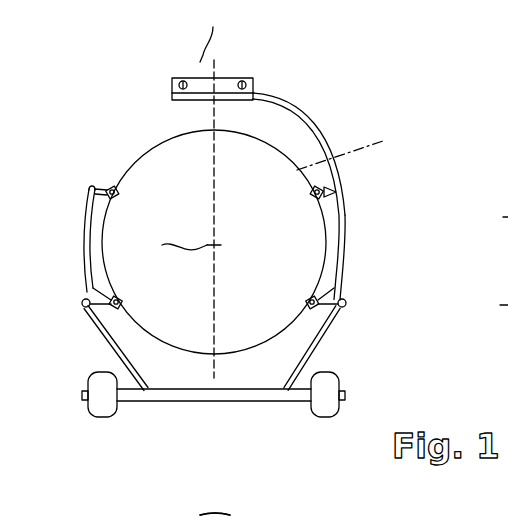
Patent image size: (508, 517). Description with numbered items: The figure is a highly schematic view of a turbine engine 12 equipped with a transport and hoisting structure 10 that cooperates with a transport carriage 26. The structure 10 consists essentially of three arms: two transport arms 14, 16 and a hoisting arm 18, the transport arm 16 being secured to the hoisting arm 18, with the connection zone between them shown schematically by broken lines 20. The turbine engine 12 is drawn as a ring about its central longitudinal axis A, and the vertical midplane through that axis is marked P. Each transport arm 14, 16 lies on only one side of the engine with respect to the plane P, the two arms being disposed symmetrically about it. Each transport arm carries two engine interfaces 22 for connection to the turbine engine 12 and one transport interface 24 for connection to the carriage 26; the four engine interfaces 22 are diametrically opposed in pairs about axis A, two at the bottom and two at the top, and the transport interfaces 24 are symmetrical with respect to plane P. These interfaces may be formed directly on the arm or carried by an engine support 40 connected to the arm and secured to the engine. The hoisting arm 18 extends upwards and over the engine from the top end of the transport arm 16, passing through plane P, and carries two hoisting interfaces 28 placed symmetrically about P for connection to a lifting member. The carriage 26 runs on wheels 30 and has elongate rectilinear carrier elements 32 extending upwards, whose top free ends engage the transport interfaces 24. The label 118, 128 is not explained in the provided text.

The transport and hoisting structure 10 is at (347, 105).
The turbine engine 12 is at (148, 154).
The transport arm 14 is at (84, 229).
The transport arm 16 is at (346, 218).
The hoisting arm 18 is at (300, 108).
The broken lines 20 is at (372, 150).
The engine interface 22 is at (118, 196).
The transport interface 24 is at (82, 304).
The transport carriage 26 is at (347, 382).
The hoisting interface 28 is at (183, 81).
The wheel 30 is at (102, 402).
The carrier element 32 is at (116, 353).
The engine support 40 is at (119, 191).
The vibrating element 118 is at (175, 516).
The drive element 128 is at (215, 514).